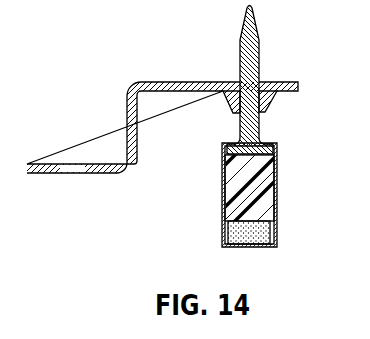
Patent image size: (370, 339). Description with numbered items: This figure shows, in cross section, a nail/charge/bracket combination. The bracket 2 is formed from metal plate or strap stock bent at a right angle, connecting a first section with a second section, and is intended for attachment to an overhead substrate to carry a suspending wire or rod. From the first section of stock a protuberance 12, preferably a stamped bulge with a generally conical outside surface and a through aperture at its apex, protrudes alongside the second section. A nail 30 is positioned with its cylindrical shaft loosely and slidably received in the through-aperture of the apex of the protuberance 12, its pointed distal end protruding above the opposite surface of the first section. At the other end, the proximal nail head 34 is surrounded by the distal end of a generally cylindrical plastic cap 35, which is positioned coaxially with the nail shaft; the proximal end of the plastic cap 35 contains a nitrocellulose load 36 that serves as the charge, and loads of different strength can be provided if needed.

The bracket 2 is at (124, 76).
The protuberance 12 is at (266, 100).
The nail 30 is at (260, 52).
The nail head 34 is at (257, 158).
The plastic cap 35 is at (223, 196).
The nitrocellulose load 36 is at (258, 236).